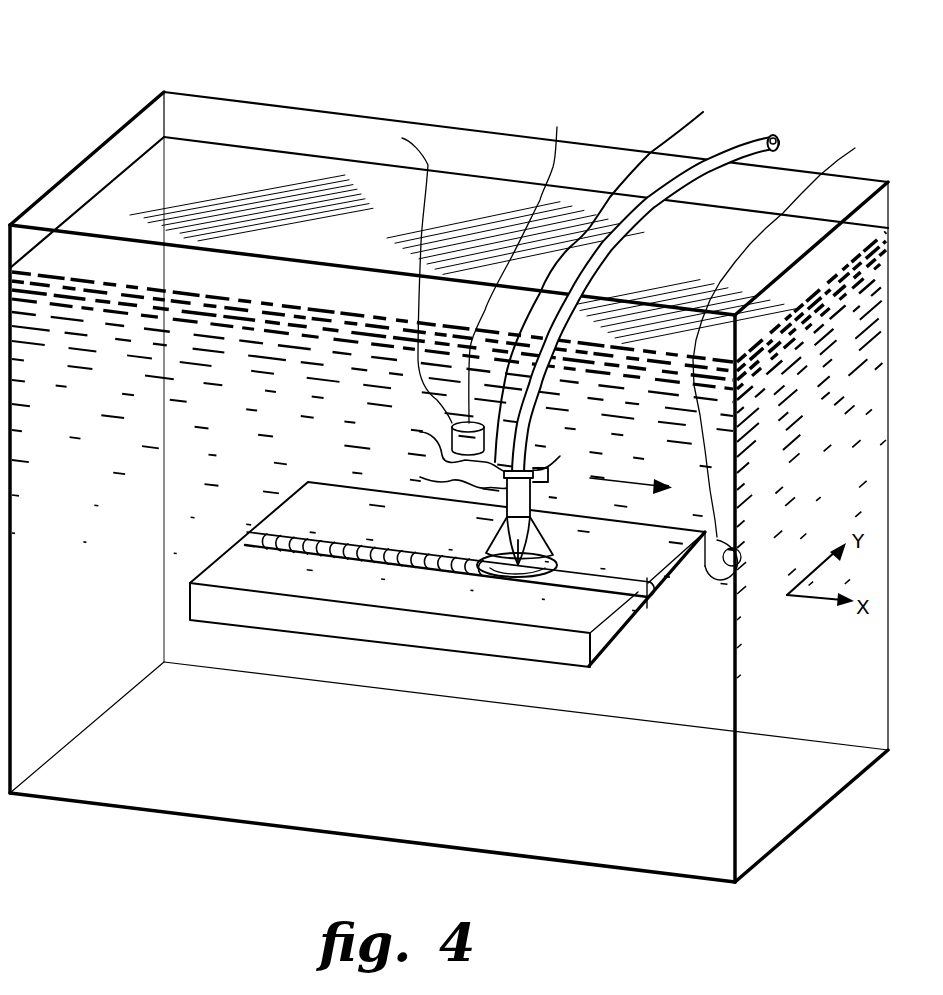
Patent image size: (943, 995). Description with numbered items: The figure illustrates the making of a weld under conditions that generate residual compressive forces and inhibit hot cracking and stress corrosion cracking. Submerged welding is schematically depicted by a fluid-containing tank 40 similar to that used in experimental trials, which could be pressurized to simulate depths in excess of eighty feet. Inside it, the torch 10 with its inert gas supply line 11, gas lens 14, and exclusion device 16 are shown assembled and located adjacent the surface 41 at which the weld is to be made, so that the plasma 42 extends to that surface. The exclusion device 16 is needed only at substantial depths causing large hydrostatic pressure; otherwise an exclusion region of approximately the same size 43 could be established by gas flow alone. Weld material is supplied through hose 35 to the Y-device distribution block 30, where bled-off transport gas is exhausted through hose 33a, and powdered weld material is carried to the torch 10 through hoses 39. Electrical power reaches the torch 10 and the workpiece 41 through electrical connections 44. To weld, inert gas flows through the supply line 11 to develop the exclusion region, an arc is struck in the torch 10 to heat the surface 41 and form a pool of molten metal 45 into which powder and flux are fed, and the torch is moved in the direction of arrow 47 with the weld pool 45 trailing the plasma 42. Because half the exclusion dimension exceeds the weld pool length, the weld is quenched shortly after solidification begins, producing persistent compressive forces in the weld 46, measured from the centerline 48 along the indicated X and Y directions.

The torch 10 is at (548, 470).
The inert gas supply line 11 is at (733, 140).
The gas lens 14 is at (483, 487).
The exclusion device 16 is at (540, 535).
The Y-device distribution block 30 is at (426, 390).
The hose 33a is at (432, 142).
The hose 35 is at (557, 127).
The hoses 39 is at (430, 458).
The fluid-containing tank 40 is at (96, 142).
The surface 41 is at (335, 507).
The plasma 42 is at (517, 570).
The exclusion region 43 is at (560, 573).
The electrical connections 44 is at (664, 138).
The weld pool 45 is at (490, 573).
The weld 46 is at (278, 530).
The arrow 47 is at (640, 456).
The centerline 48 is at (719, 588).